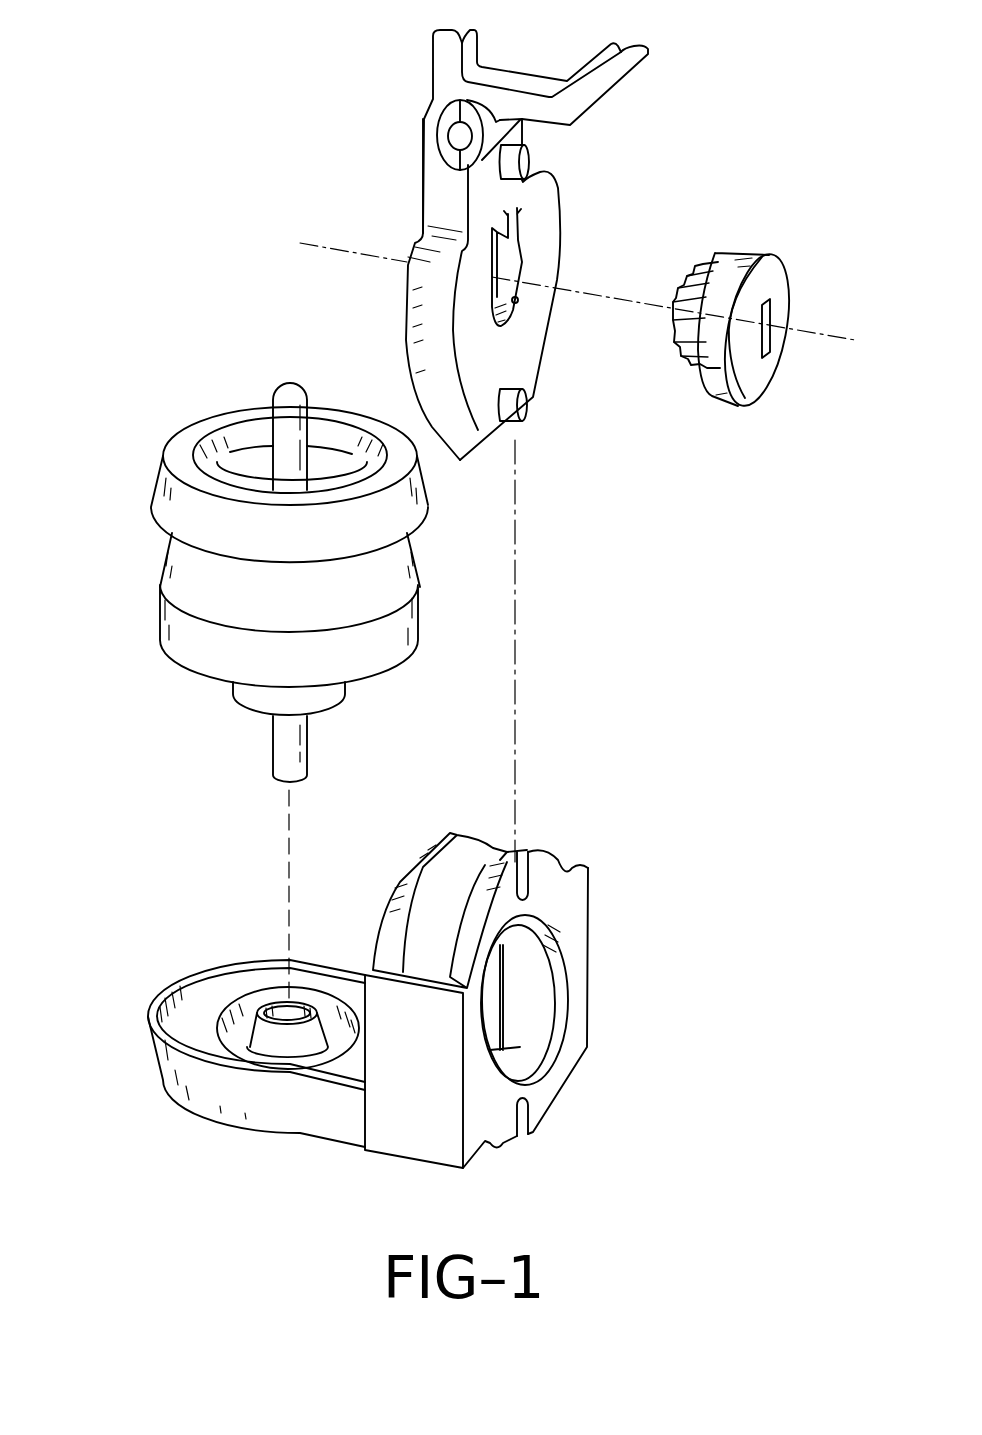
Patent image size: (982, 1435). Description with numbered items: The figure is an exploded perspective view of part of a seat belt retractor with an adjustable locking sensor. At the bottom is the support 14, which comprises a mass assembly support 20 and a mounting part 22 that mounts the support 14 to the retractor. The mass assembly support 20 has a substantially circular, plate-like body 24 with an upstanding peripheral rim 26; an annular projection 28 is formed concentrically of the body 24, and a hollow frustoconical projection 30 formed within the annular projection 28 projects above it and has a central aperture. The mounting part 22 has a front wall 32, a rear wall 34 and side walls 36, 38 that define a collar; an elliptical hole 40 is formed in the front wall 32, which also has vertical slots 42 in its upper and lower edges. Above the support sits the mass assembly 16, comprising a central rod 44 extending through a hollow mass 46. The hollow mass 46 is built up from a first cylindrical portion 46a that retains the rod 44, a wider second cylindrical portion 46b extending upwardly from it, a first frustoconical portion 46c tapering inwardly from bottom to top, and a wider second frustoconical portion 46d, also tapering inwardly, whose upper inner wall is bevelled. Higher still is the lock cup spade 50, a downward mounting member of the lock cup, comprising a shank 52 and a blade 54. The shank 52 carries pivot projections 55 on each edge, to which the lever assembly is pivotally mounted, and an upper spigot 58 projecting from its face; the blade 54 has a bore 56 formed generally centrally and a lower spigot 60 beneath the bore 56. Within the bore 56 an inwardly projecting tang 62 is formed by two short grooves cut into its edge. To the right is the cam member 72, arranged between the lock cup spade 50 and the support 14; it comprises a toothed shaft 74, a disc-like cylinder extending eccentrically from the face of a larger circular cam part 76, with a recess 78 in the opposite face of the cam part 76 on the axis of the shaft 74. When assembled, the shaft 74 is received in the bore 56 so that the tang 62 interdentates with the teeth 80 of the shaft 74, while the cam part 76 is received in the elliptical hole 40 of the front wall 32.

The support 14 is at (589, 949).
The mass assembly 16 is at (422, 609).
The mass assembly support 20 is at (333, 1117).
The mounting part 22 is at (575, 1025).
The body 24 is at (198, 1083).
The peripheral rim 26 is at (175, 983).
The annular projection 28 is at (215, 1030).
The frustoconical projection 30 is at (287, 1002).
The front wall 32 is at (553, 1060).
The rear wall 34 is at (467, 850).
The side wall 36 is at (435, 1142).
The side wall 38 is at (520, 977).
The elliptical hole 40 is at (550, 940).
The vertical slots 42 is at (520, 858).
The central rod 44 is at (307, 757).
The hollow mass 46 is at (170, 557).
The first cylindrical portion 46a is at (257, 703).
The second cylindrical portion 46b is at (190, 632).
The first frustoconical portion 46c is at (417, 547).
The second frustoconical portion 46d is at (165, 478).
The lock cup spade 50 is at (560, 200).
The shank 52 is at (440, 202).
The blade 54 is at (545, 347).
The pivot projections 55 is at (452, 142).
The bore 56 is at (514, 302).
The upper spigot 58 is at (527, 163).
The lower spigot 60 is at (520, 412).
The tang 62 is at (508, 242).
The cam member 72 is at (769, 248).
The toothed shaft 74 is at (710, 265).
The cam part 76 is at (787, 300).
The recess 78 is at (772, 337).
The teeth 80 is at (680, 327).